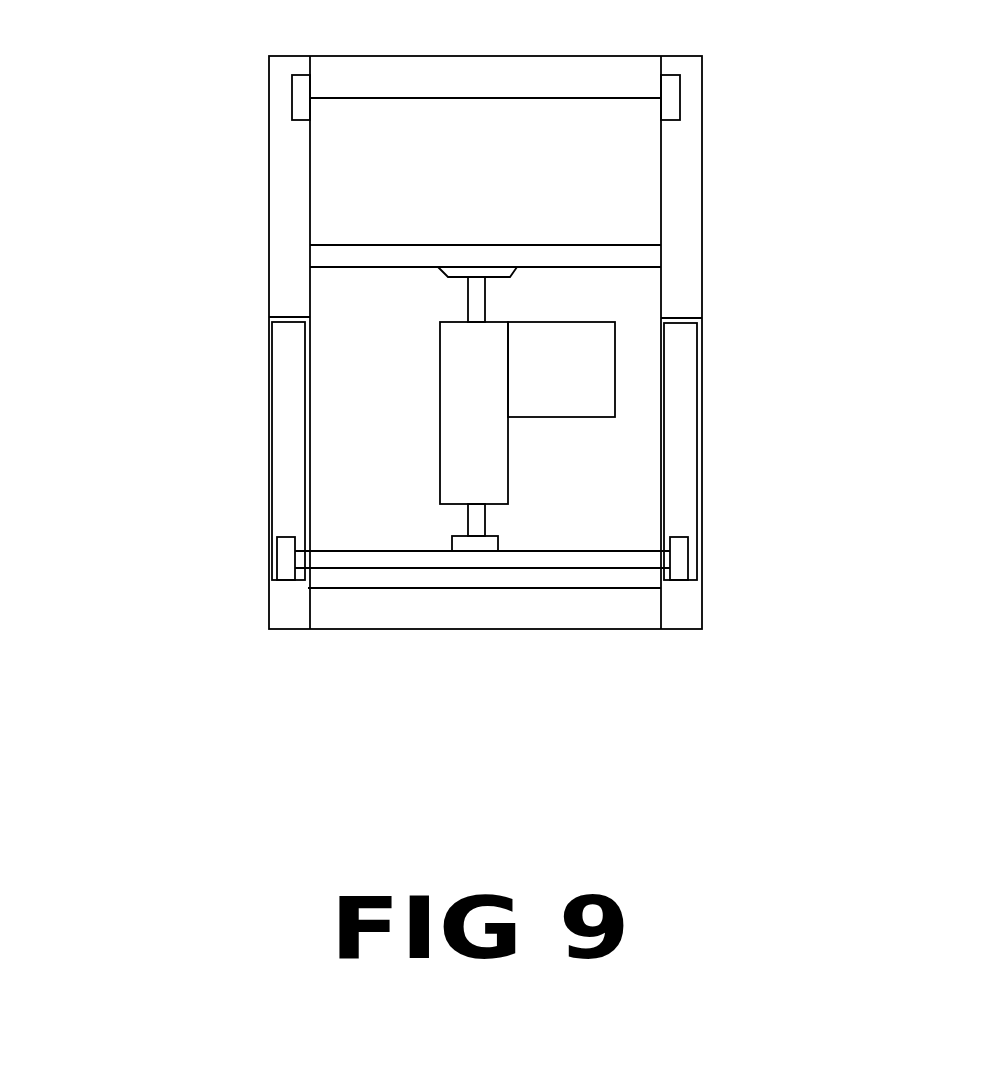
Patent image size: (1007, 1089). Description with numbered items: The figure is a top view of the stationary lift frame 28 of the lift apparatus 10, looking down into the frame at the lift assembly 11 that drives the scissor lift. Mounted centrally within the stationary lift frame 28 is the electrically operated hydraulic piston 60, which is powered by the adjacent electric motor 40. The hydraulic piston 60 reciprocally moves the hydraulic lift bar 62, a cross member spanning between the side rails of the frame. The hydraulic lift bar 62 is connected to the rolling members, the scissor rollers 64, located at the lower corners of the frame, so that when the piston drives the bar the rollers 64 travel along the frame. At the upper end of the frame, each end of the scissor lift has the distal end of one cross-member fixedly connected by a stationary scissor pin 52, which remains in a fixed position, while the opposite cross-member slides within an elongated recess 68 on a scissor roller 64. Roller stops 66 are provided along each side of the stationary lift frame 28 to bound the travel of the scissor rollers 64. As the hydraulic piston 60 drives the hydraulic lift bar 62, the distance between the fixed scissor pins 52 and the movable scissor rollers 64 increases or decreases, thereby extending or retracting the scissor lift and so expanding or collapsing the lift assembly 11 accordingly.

The lift apparatus 10 is at (365, 184).
The lift assembly 11 is at (762, 530).
The stationary lift frame 28 is at (268, 220).
The electric motor 40 is at (615, 363).
The stationary scissor pin 52 is at (291, 92).
The electrically operated hydraulic piston 60 is at (438, 455).
The hydraulic lift bar 62 is at (580, 245).
The scissor roller 64 is at (309, 588).
The roller stops 66 is at (297, 316).
The elongated recess 68 is at (310, 497).